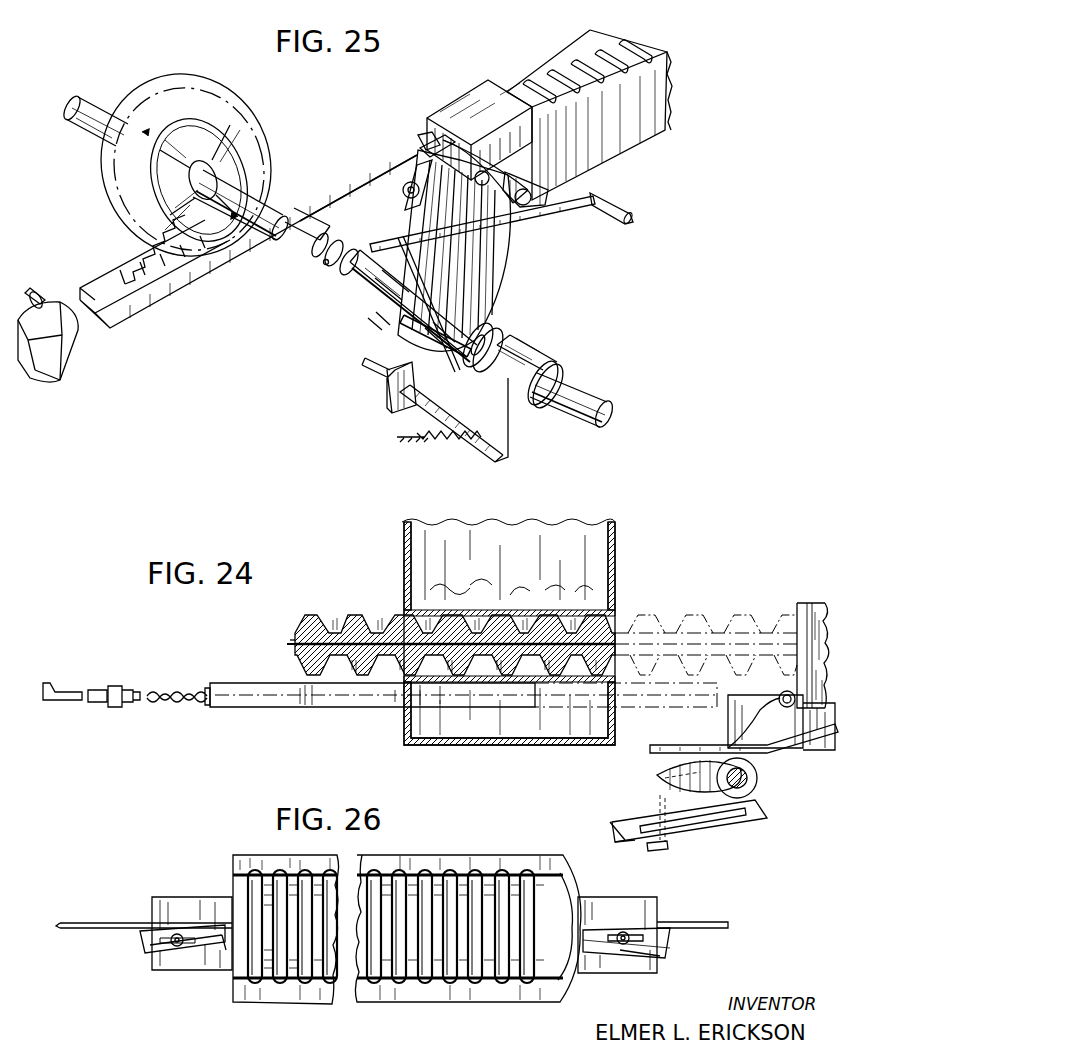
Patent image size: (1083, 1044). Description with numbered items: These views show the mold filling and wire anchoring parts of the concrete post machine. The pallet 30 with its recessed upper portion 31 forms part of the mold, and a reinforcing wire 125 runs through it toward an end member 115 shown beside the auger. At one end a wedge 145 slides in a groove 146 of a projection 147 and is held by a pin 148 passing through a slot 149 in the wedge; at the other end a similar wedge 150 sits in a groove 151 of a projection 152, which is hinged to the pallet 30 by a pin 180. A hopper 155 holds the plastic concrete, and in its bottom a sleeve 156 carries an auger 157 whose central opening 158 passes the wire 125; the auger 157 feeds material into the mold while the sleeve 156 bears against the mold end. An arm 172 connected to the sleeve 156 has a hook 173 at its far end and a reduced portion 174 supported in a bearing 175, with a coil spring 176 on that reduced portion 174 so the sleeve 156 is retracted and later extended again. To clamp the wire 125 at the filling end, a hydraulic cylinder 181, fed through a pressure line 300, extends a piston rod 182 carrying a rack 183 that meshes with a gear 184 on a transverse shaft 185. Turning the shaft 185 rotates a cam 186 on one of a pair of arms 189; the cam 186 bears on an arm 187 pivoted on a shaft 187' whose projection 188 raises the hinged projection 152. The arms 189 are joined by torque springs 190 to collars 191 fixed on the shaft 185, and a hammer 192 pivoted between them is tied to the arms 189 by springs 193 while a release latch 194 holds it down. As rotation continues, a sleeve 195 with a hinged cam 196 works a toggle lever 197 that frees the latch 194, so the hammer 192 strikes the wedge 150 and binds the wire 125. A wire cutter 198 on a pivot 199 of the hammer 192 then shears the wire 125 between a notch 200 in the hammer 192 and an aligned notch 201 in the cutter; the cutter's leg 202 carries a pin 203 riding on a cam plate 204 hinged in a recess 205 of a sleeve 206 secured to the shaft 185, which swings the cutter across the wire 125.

In FIG. 25, the pallet 30 is at (640, 130).
In FIG. 24, the pallet 30 is at (803, 712).
In FIG. 26, the pallet 30 is at (470, 855).
In FIG. 26, the recessed upper portion 31 is at (412, 982).
In FIG. 24, the end block 115 is at (820, 612).
In FIG. 25, the wire 125 is at (355, 165).
In FIG. 24, the wire 125 is at (288, 650).
In FIG. 26, the wire 125 is at (725, 922).
In FIG. 26, the wedge 145 is at (670, 945).
In FIG. 26, the groove 146 is at (628, 948).
In FIG. 26, the projection 147 is at (642, 897).
In FIG. 26, the bolt or pin 148 is at (618, 948).
In FIG. 26, the slot 149 is at (640, 958).
In FIG. 26, the wedge 150 is at (145, 945).
In FIG. 26, the groove 151 is at (190, 955).
In FIG. 25, the projection 152 is at (458, 112).
In FIG. 26, the projection 152 is at (182, 895).
In FIG. 24, the hopper 155 is at (616, 552).
In FIG. 24, the sleeve 156 is at (545, 590).
In FIG. 24, the auger 157 is at (335, 628).
In FIG. 24, the central opening 158 is at (270, 615).
In FIG. 24, the arm 172 is at (358, 710).
In FIG. 24, the hook 173 is at (56, 692).
In FIG. 24, the reduced portion 174 is at (103, 704).
In FIG. 24, the bearing 175 is at (135, 668).
In FIG. 24, the coil spring 176 is at (196, 668).
In FIG. 25, the pin 180 is at (543, 185).
In FIG. 24, the pin 180 is at (787, 706).
In FIG. 25, the hydraulic cylinder 181 is at (48, 370).
In FIG. 25, the piston rod 182 is at (75, 298).
In FIG. 25, the rack 183 is at (165, 290).
In FIG. 25, the gear 184 is at (262, 112).
In FIG. 25, the transverse shaft 185 is at (104, 128).
In FIG. 24, the transverse shaft 185 is at (748, 780).
In FIG. 25, the cam 186 is at (502, 282).
In FIG. 24, the cam 186 is at (660, 778).
In FIG. 25, the arm 187 is at (486, 224).
In FIG. 24, the arm 187 is at (744, 747).
In FIG. 25, the shaft 187' is at (643, 204).
In FIG. 25, the projection 188 is at (505, 188).
In FIG. 24, the projection 188 is at (780, 708).
In FIG. 25, the arms 189 is at (402, 234).
In FIG. 25, the torque springs 190 is at (490, 327).
In FIG. 25, the collars 191 is at (366, 290).
In FIG. 25, the hammer 192 is at (428, 336).
In FIG. 24, the hammer 192 is at (655, 808).
In FIG. 25, the springs 193 is at (450, 350).
In FIG. 25, the release latch 194 is at (366, 378).
In FIG. 25, the sleeve 195 is at (545, 362).
In FIG. 25, the hinged cam 196 is at (518, 372).
In FIG. 25, the toggle lever 197 is at (508, 432).
In FIG. 25, the wire cutter 198 is at (378, 330).
In FIG. 24, the wire cutter 198 is at (703, 825).
In FIG. 25, the pivot 199 is at (404, 190).
In FIG. 24, the pivot 199 is at (655, 850).
In FIG. 25, the groove or notch 200 is at (428, 138).
In FIG. 25, the groove or notch 201 is at (422, 146).
In FIG. 25, the leg 202 is at (345, 285).
In FIG. 25, the pin 203 is at (318, 266).
In FIG. 25, the cam plate 204 is at (312, 236).
In FIG. 25, the recess 205 is at (312, 256).
In FIG. 25, the sleeve 206 is at (325, 205).
In FIG. 25, the pressure line 300 is at (75, 292).